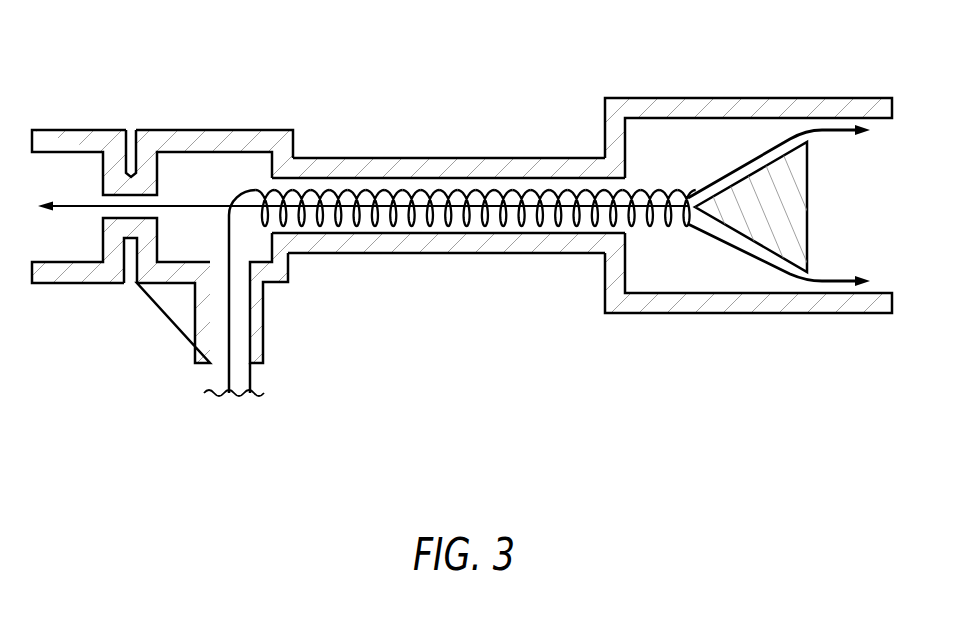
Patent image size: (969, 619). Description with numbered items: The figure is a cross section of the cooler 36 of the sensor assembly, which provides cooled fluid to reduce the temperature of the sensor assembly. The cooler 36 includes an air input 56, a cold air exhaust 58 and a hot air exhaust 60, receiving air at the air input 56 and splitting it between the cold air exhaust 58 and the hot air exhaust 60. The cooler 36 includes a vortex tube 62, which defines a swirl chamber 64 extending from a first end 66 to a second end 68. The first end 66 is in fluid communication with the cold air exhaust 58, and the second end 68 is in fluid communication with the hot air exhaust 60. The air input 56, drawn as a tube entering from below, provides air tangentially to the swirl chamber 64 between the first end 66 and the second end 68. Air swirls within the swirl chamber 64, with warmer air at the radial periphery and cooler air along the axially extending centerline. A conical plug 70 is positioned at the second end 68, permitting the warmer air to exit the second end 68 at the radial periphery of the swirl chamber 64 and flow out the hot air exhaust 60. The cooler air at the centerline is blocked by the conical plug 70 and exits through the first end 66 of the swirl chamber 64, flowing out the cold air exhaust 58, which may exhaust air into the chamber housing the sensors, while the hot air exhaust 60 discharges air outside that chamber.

The cooler 36 is at (381, 58).
The air input 56 is at (220, 373).
The cold air exhaust 58 is at (68, 172).
The hot air exhaust 60 is at (833, 125).
The vortex tube 62 is at (465, 157).
The swirl chamber 64 is at (475, 225).
The first end 66 is at (122, 200).
The second end 68 is at (670, 270).
The conical plug 70 is at (790, 240).